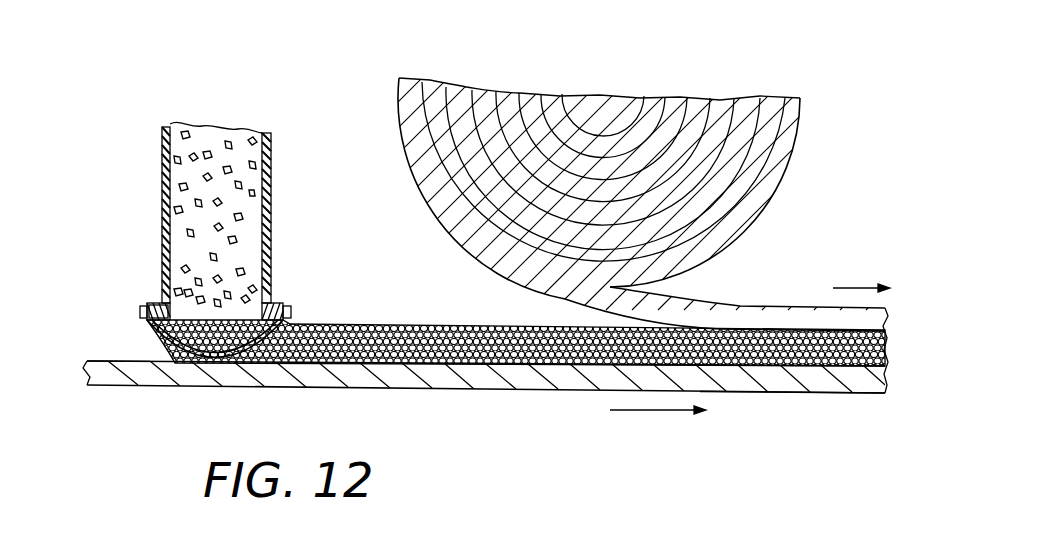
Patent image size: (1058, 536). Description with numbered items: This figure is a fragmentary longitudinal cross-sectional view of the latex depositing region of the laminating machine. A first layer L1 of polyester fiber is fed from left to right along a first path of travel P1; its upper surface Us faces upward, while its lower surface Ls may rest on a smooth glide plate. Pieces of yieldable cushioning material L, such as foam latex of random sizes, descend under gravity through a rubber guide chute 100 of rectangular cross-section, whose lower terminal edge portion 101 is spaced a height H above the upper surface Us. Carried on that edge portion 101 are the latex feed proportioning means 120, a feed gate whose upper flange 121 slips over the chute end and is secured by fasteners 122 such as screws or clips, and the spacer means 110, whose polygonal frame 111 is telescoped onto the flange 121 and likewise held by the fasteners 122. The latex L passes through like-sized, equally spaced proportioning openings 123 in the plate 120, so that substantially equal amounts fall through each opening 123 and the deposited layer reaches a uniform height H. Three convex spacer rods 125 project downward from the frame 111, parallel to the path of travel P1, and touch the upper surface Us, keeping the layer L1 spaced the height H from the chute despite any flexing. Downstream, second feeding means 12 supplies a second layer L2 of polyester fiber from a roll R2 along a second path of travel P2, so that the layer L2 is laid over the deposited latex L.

The second feeding means 12 is at (624, 175).
The roll of second material R2 is at (784, 152).
The second layer L2 is at (725, 288).
The guide chute 100 is at (311, 200).
The lower terminal edge portion 101 is at (272, 228).
The cushioning materials L is at (240, 186).
The latex feed proportioning means 120 is at (224, 319).
The upper flange 121 is at (160, 303).
The polygonal frame 111 is at (152, 305).
The spacer means 110 is at (300, 311).
The fasteners 122 is at (142, 310).
The proportioning openings 123 is at (242, 322).
The spacer rods 125 is at (235, 362).
The height H is at (365, 305).
The lower surface Ls is at (483, 381).
The upper surface Us is at (118, 361).
The first layer L1 is at (820, 393).
The first path of travel P1 is at (660, 411).
The second path of travel P2 is at (850, 287).